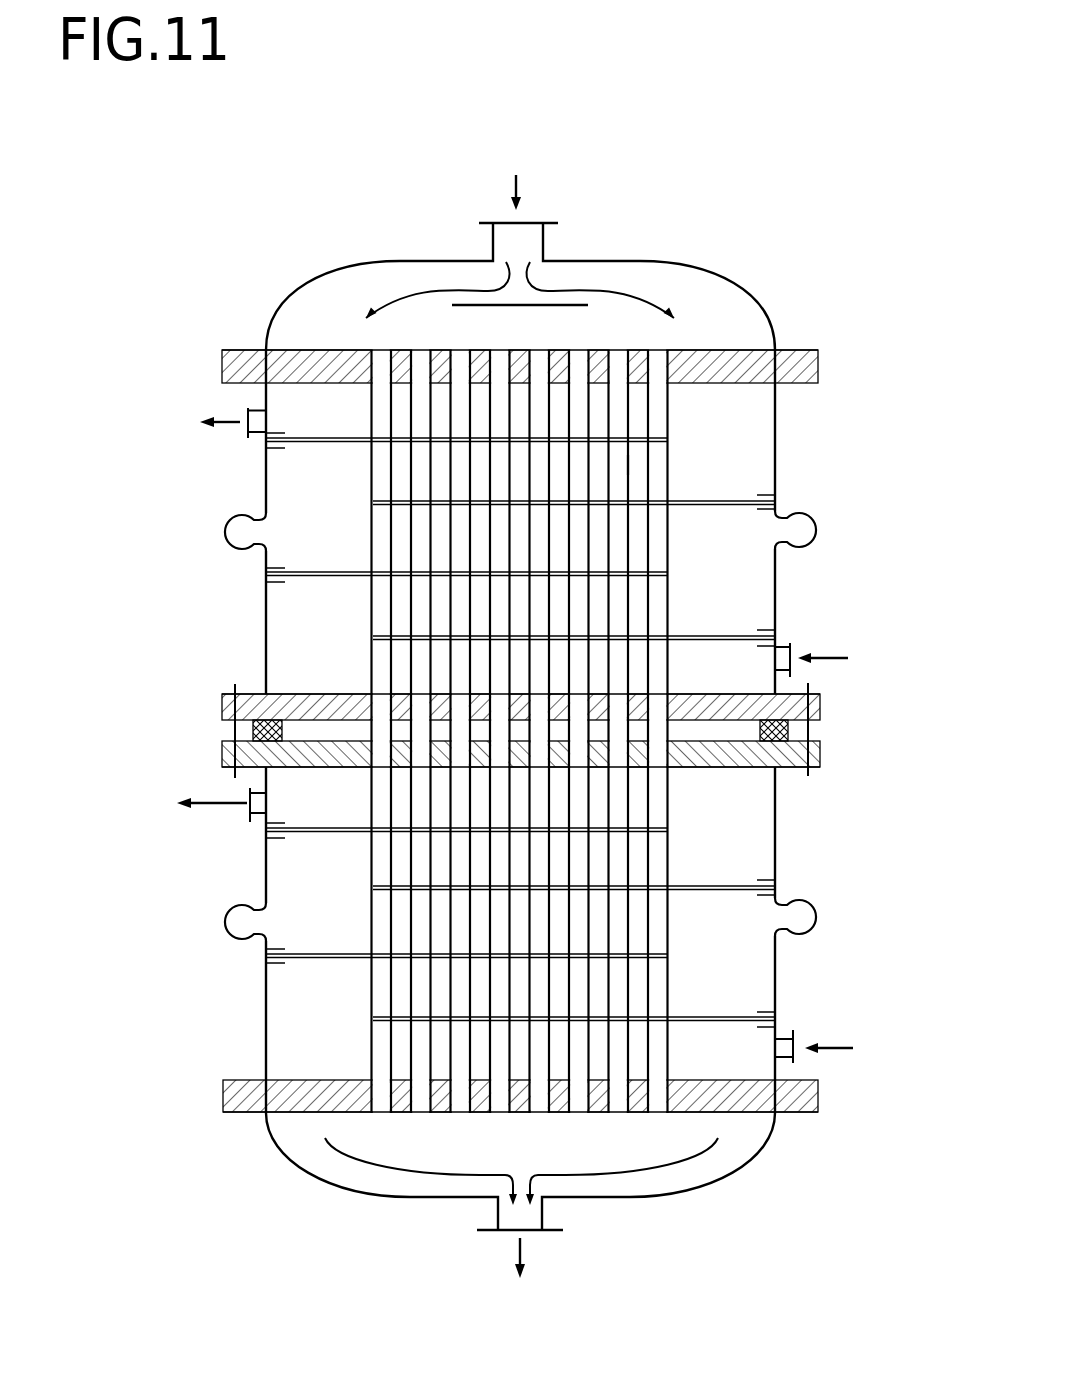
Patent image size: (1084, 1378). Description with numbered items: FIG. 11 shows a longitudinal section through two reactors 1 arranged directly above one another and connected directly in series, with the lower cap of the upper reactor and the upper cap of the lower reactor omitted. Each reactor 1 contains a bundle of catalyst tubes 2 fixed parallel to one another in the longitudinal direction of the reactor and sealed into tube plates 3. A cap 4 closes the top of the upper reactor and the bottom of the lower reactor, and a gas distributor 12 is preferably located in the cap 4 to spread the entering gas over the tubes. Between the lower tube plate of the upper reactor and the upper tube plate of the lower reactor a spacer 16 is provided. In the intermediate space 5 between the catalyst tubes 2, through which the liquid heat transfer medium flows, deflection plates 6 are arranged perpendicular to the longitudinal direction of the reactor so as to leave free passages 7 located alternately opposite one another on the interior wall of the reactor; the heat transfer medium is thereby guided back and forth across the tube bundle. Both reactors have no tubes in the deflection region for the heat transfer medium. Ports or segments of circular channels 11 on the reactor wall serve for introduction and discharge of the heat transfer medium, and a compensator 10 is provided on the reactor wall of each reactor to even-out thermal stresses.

The reactor 1 is at (355, 249).
The catalyst tubes 2 is at (657, 418).
The tube plates 3 is at (797, 349).
The caps 4 is at (300, 300).
The intermediate space 5 is at (637, 464).
The deflection plates 6 is at (333, 445).
The free passages 7 is at (305, 500).
The compensator 10 is at (817, 532).
The ports or segments of circular channels 11 is at (250, 407).
The gas distributors 12 is at (535, 303).
The spacer 16 is at (790, 732).